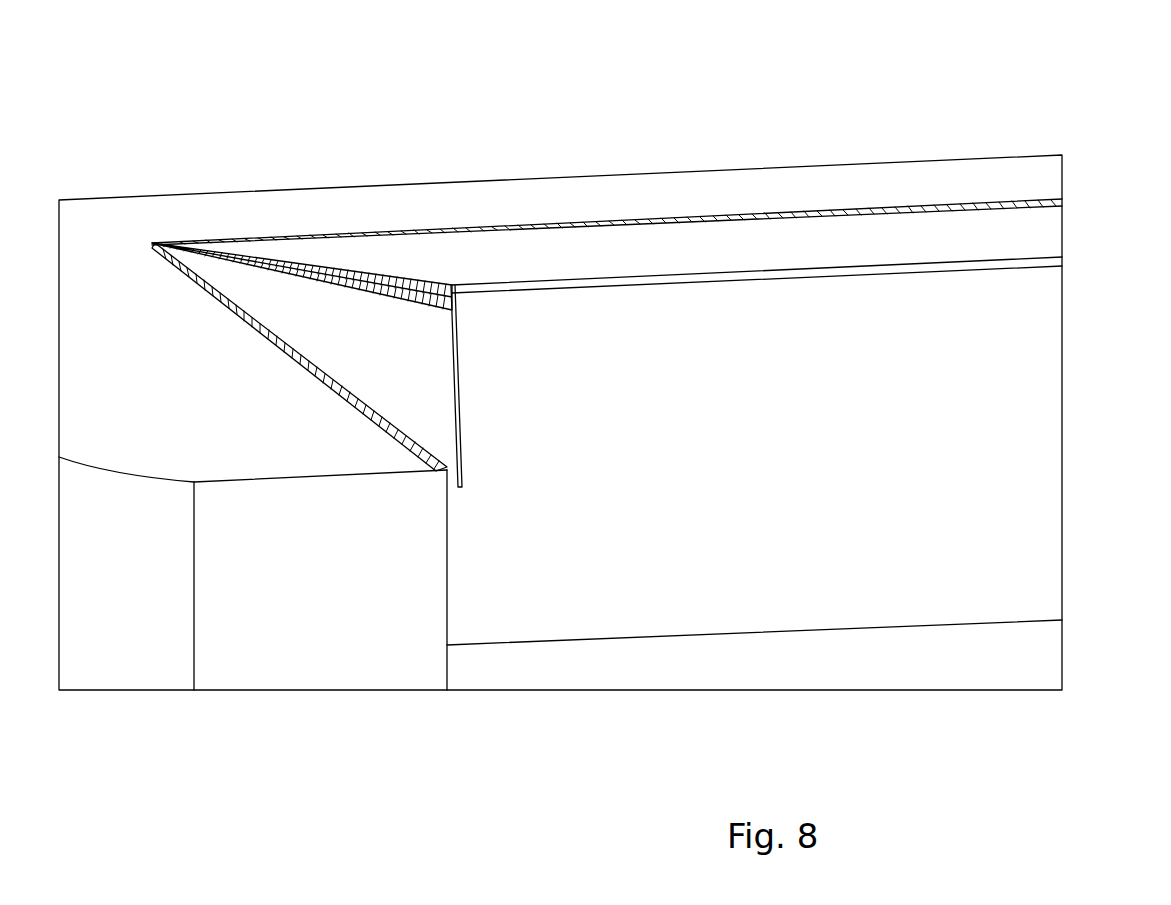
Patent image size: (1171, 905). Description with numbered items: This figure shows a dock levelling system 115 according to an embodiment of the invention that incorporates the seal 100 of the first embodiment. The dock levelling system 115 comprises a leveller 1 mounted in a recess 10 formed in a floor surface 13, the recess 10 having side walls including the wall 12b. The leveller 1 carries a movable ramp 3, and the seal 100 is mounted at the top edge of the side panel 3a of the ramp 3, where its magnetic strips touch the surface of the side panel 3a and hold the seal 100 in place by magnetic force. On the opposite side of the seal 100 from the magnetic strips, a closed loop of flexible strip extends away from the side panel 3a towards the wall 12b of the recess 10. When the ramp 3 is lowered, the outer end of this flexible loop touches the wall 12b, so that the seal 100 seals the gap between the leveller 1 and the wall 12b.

The leveller 1 is at (1015, 335).
The ramp 3 is at (422, 256).
The side panel 3a is at (432, 343).
The recess 10 is at (587, 598).
The side wall 12b is at (447, 620).
The floor surface 13 is at (86, 237).
The seal 100 is at (291, 263).
The dock levelling system 115 is at (747, 135).